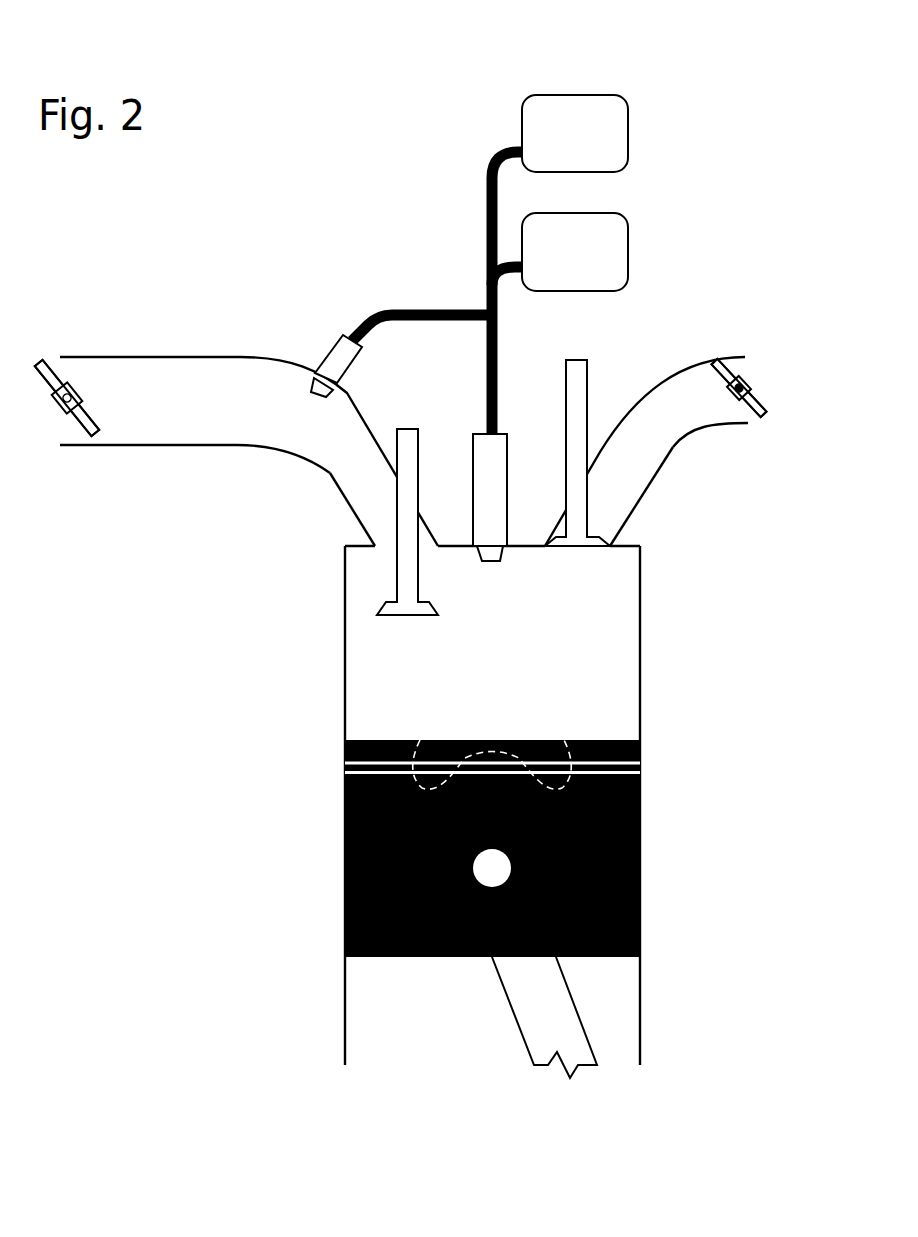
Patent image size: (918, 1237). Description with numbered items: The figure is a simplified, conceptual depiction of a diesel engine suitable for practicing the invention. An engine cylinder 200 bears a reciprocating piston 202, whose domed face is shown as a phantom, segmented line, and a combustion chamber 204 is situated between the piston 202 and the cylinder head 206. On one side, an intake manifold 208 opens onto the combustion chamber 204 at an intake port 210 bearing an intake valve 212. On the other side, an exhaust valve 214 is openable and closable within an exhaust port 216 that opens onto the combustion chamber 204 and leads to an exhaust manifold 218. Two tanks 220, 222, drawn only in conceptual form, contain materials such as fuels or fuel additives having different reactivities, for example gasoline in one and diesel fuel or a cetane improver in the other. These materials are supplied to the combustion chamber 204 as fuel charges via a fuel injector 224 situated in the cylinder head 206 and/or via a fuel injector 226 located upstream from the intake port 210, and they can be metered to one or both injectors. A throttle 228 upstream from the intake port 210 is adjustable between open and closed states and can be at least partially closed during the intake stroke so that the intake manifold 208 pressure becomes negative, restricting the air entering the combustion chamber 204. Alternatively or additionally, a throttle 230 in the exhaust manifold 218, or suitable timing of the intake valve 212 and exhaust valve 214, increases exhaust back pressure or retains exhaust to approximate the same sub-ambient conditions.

The engine cylinder 200 is at (346, 640).
The piston 202 is at (642, 933).
The combustion chamber 204 is at (585, 673).
The cylinder head 206 is at (457, 546).
The intake manifold 208 is at (250, 447).
The intake port 210 is at (375, 546).
The intake valve 212 is at (398, 572).
The exhaust valve 214 is at (588, 503).
The exhaust port 216 is at (612, 548).
The exhaust manifold 218 is at (688, 367).
The tank 220 is at (600, 269).
The tank 222 is at (600, 151).
The fuel injector 224 is at (507, 460).
The fuel injector 226 is at (338, 337).
The throttle 228 is at (88, 413).
The throttle 230 is at (770, 402).